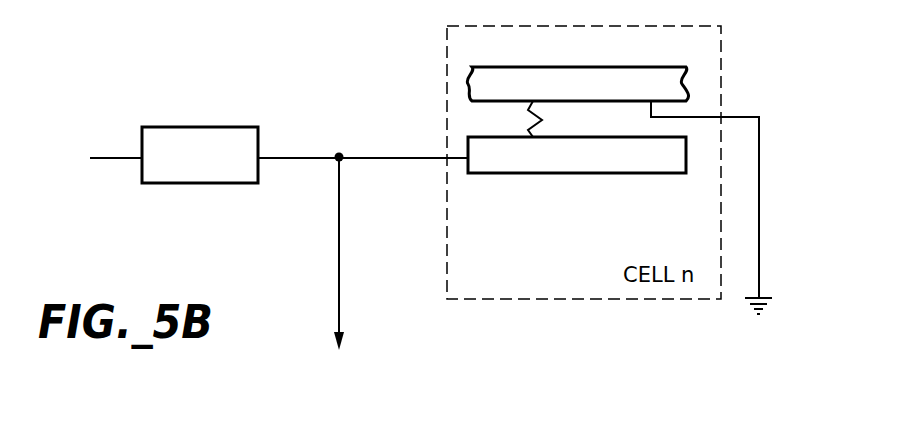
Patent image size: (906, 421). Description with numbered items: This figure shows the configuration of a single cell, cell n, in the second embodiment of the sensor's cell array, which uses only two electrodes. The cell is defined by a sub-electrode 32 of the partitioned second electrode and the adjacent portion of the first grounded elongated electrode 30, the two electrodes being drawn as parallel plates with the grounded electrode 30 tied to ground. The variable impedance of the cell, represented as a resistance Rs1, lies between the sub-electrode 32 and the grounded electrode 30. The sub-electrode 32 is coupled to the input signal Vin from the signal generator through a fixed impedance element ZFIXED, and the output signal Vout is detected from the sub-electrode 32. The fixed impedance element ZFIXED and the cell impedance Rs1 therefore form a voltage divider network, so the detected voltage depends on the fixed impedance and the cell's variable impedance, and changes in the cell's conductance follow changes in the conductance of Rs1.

The grounded elongated electrode 30 is at (577, 84).
The sub-electrode 32 is at (577, 155).
The cell conductance Rs1 is at (557, 119).
The fixed impedance element ZFIXED is at (200, 155).
The input signal Vin is at (116, 141).
The output signal Vout is at (290, 253).